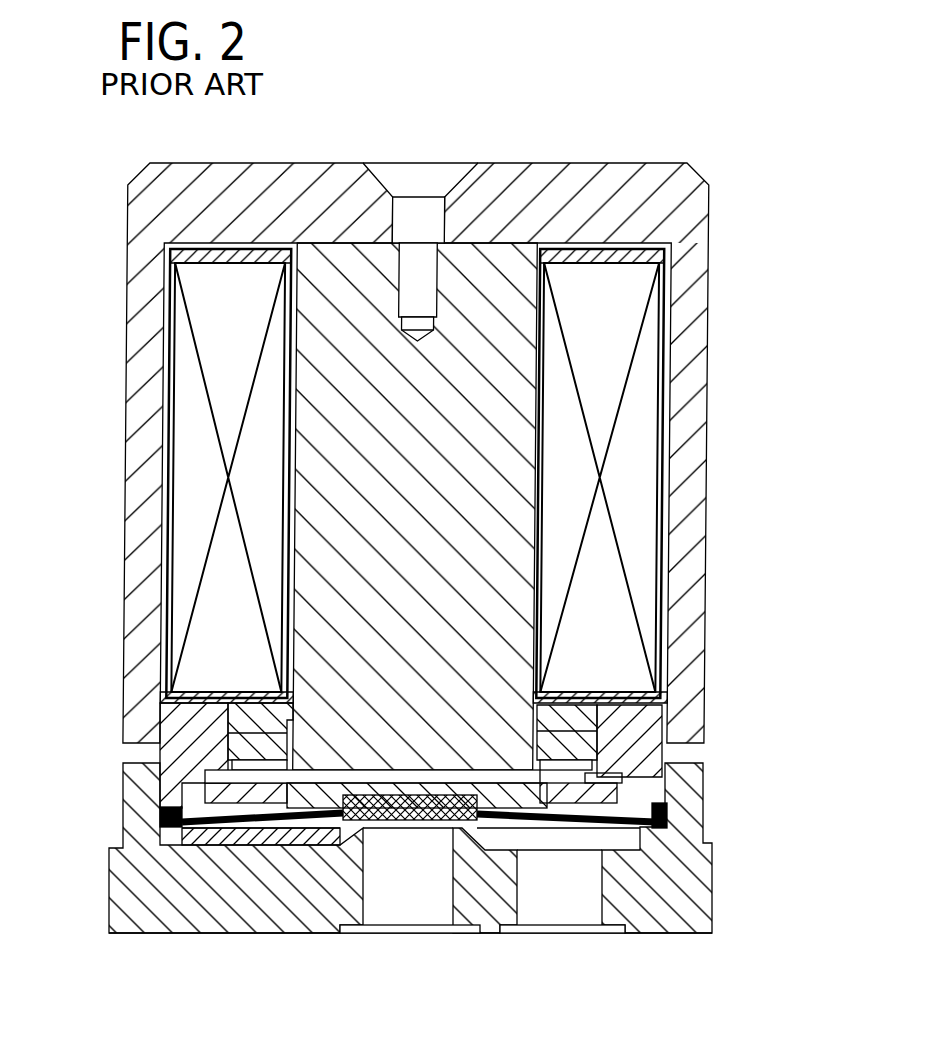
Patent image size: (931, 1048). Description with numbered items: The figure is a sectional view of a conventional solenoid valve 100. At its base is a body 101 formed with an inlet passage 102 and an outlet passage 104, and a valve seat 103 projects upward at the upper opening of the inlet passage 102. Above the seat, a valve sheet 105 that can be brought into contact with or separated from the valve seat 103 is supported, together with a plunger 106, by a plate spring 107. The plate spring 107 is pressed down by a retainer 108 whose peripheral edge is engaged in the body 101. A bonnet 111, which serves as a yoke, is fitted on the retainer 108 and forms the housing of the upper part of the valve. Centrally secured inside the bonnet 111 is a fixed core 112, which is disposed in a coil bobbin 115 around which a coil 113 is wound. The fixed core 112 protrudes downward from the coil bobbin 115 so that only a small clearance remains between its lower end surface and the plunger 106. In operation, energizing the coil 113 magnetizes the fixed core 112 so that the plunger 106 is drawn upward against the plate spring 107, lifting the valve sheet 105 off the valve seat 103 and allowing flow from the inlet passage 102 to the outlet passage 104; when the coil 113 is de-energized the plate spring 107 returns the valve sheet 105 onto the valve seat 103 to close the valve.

The solenoid valve 100 is at (470, 101).
The body 101 is at (233, 908).
The inlet passage 102 is at (393, 905).
The valve seat 103 is at (443, 830).
The outlet passage 104 is at (568, 908).
The valve sheet 105 is at (340, 795).
The plunger 106 is at (228, 793).
The plate spring 107 is at (213, 820).
The retainer 108 is at (186, 702).
The bonnet 111 is at (585, 178).
The fixed core 112 is at (488, 364).
The coil 113 is at (620, 637).
The coil bobbin 115 is at (553, 458).